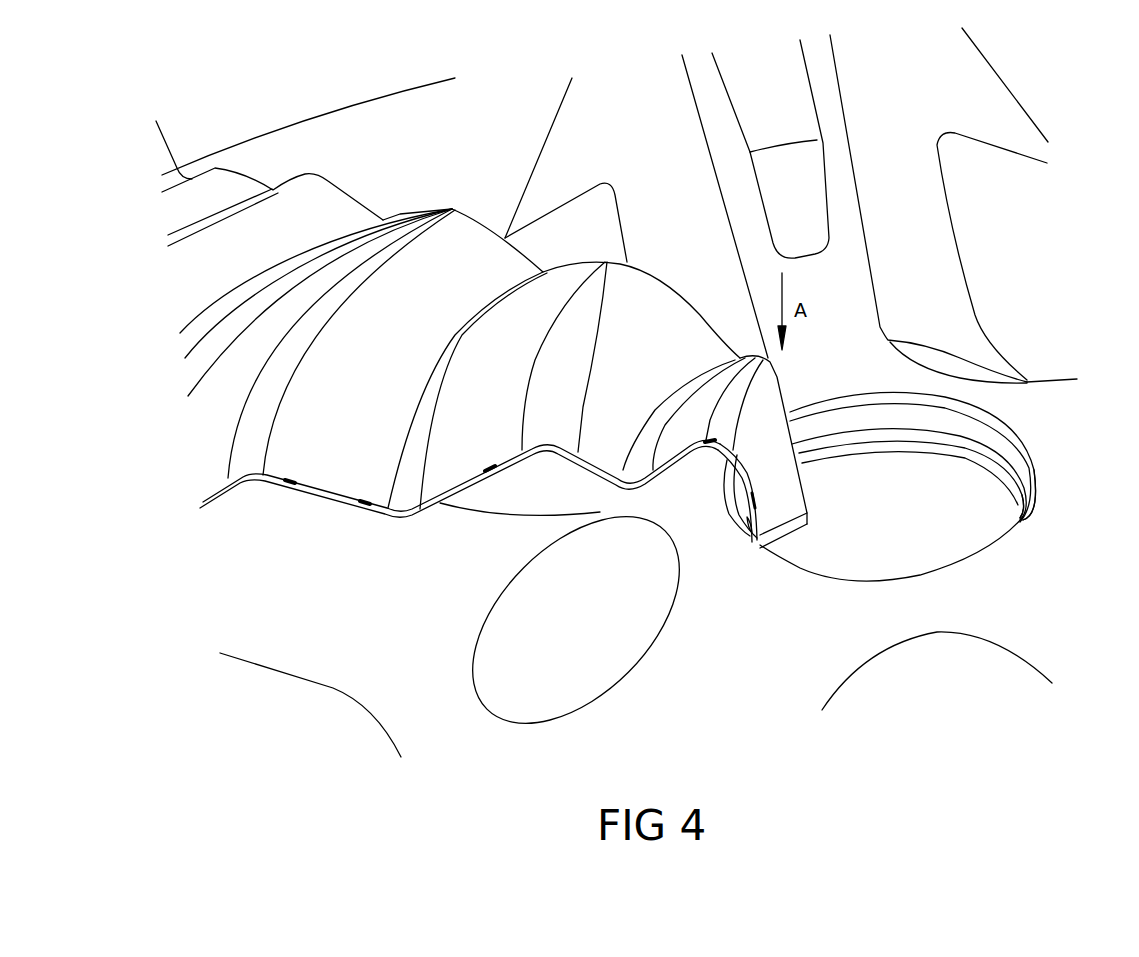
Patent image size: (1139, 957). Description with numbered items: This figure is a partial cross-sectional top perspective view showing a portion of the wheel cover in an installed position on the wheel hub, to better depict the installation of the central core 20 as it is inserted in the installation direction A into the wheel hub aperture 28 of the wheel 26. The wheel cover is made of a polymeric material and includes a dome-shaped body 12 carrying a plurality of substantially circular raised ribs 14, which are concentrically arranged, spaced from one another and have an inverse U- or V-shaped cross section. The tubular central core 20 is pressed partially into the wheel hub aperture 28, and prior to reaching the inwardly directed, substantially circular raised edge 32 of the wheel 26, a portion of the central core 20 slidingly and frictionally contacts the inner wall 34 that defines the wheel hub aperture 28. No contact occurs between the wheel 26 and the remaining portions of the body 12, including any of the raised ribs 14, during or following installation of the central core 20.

The body 12 is at (323, 209).
The raised ribs 14 is at (455, 208).
The central core 20 is at (773, 463).
The wheel 26 is at (668, 105).
The wheel hub aperture 28 is at (983, 415).
The raised edge 32 is at (915, 450).
The inner wall 34 is at (1034, 459).